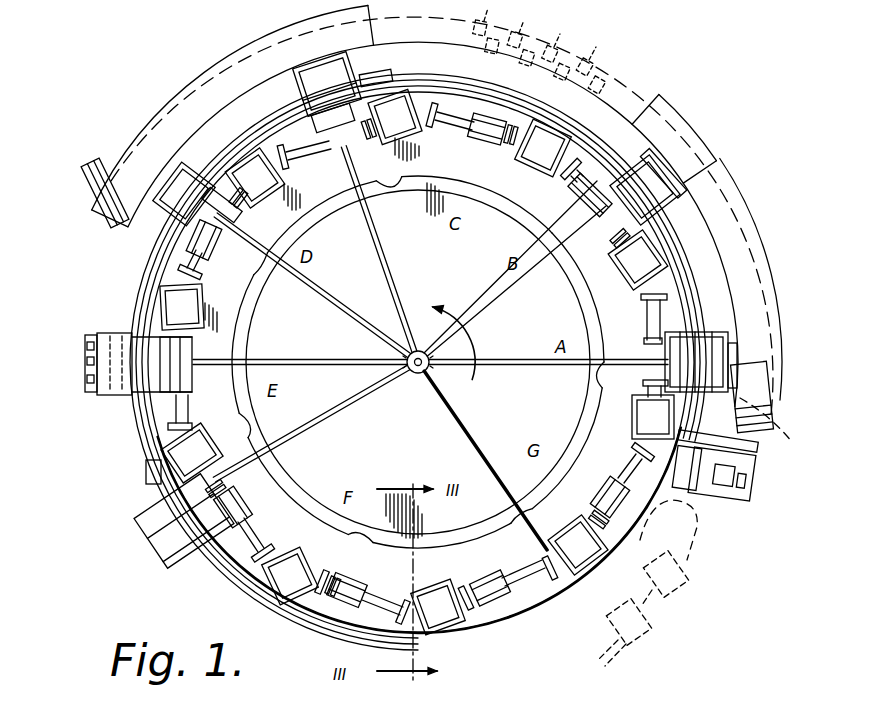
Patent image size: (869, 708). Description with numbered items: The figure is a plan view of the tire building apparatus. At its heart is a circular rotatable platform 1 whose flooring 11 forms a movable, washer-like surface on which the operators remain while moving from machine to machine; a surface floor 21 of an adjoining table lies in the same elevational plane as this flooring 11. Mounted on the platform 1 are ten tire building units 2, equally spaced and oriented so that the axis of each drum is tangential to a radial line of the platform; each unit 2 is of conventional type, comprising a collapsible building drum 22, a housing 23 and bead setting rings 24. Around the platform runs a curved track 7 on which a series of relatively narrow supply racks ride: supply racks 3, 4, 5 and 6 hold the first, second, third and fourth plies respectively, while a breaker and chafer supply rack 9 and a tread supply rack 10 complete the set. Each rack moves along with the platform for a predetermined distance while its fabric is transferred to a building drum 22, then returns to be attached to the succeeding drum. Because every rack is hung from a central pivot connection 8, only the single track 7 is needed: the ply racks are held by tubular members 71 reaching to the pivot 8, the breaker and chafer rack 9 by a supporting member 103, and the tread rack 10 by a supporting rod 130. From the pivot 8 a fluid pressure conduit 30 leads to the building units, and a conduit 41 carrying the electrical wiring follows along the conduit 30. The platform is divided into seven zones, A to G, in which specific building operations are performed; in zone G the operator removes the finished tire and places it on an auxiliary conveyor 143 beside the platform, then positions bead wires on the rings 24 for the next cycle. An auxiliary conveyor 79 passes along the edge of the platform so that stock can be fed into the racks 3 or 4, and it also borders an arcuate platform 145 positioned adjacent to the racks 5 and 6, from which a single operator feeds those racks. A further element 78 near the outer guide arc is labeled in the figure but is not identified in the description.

The circular rotatable platform 1 is at (465, 635).
The tire building units 2 is at (336, 599).
The first ply supply rack 3 is at (738, 352).
The second ply supply rack 4 is at (672, 165).
The third ply supply rack 5 is at (312, 65).
The fourth ply supply rack 6 is at (160, 182).
The curved track 7 is at (698, 306).
The central pivot connection 8 is at (412, 385).
The breaker and chafer supply rack 9 is at (80, 376).
The tread supply rack 10 is at (128, 543).
The flooring 11 is at (503, 617).
The surface floor 21 is at (457, 460).
The collapsible building drum 22 is at (352, 580).
The housing 23 is at (309, 562).
The bead setting rings 24 is at (323, 580).
The conduit 30 is at (485, 460).
The conduit 41 is at (470, 414).
The tubular members 71 is at (365, 294).
The outer guide segment 78 is at (722, 178).
The auxiliary conveyor 79 is at (618, 88).
The supporting member 103 is at (346, 358).
The supporting rod 130 is at (344, 412).
The auxiliary conveyor 143 is at (676, 552).
The arcuate platform 145 is at (199, 93).